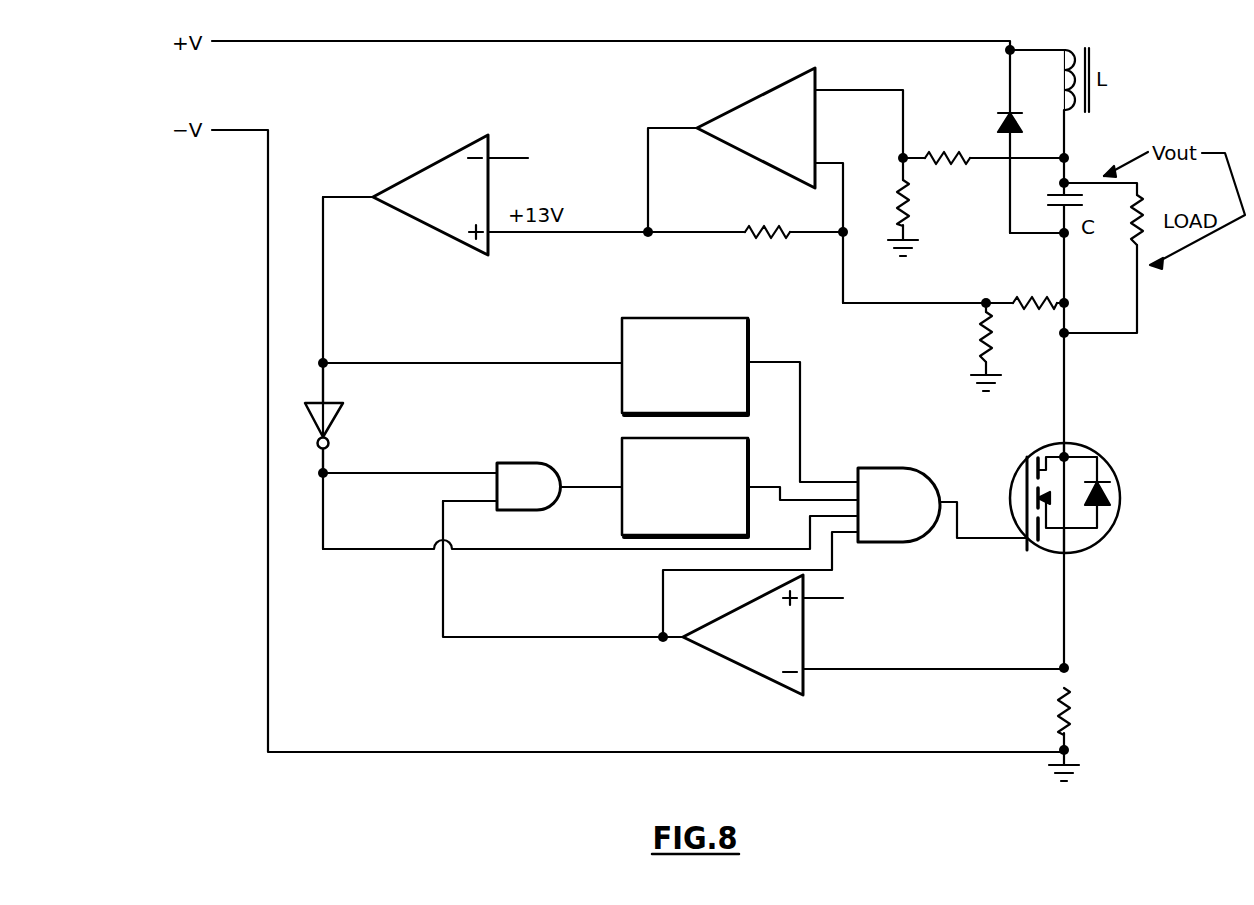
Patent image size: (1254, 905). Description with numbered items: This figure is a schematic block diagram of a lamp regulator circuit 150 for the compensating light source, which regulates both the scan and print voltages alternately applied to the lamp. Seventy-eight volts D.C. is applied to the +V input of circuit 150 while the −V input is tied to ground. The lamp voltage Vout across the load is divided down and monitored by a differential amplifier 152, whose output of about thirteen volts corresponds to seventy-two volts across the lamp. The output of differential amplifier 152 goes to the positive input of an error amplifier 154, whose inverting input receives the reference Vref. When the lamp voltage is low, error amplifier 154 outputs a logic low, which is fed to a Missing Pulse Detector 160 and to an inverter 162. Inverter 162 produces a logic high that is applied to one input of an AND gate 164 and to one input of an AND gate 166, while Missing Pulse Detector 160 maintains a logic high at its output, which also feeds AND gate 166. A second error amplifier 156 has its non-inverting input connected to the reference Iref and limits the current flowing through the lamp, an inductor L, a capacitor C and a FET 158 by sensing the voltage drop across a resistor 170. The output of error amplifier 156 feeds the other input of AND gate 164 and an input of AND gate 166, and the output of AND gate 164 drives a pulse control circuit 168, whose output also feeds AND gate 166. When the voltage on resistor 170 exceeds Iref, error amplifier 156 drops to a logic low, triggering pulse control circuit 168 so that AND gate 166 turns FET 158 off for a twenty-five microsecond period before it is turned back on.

The lamp regulator circuit 150 is at (228, 568).
The differential amplifier 152 is at (757, 103).
The error amplifier 154 is at (432, 166).
The error amplifier 156 is at (752, 682).
The FET 158 is at (1105, 468).
The Missing Pulse Detector 160 is at (695, 318).
The inverter 162 is at (337, 416).
The AND gate 164 is at (513, 463).
The AND gate 166 is at (875, 468).
The pulse control circuit 168 is at (750, 455).
The resistor 170 is at (1073, 712).